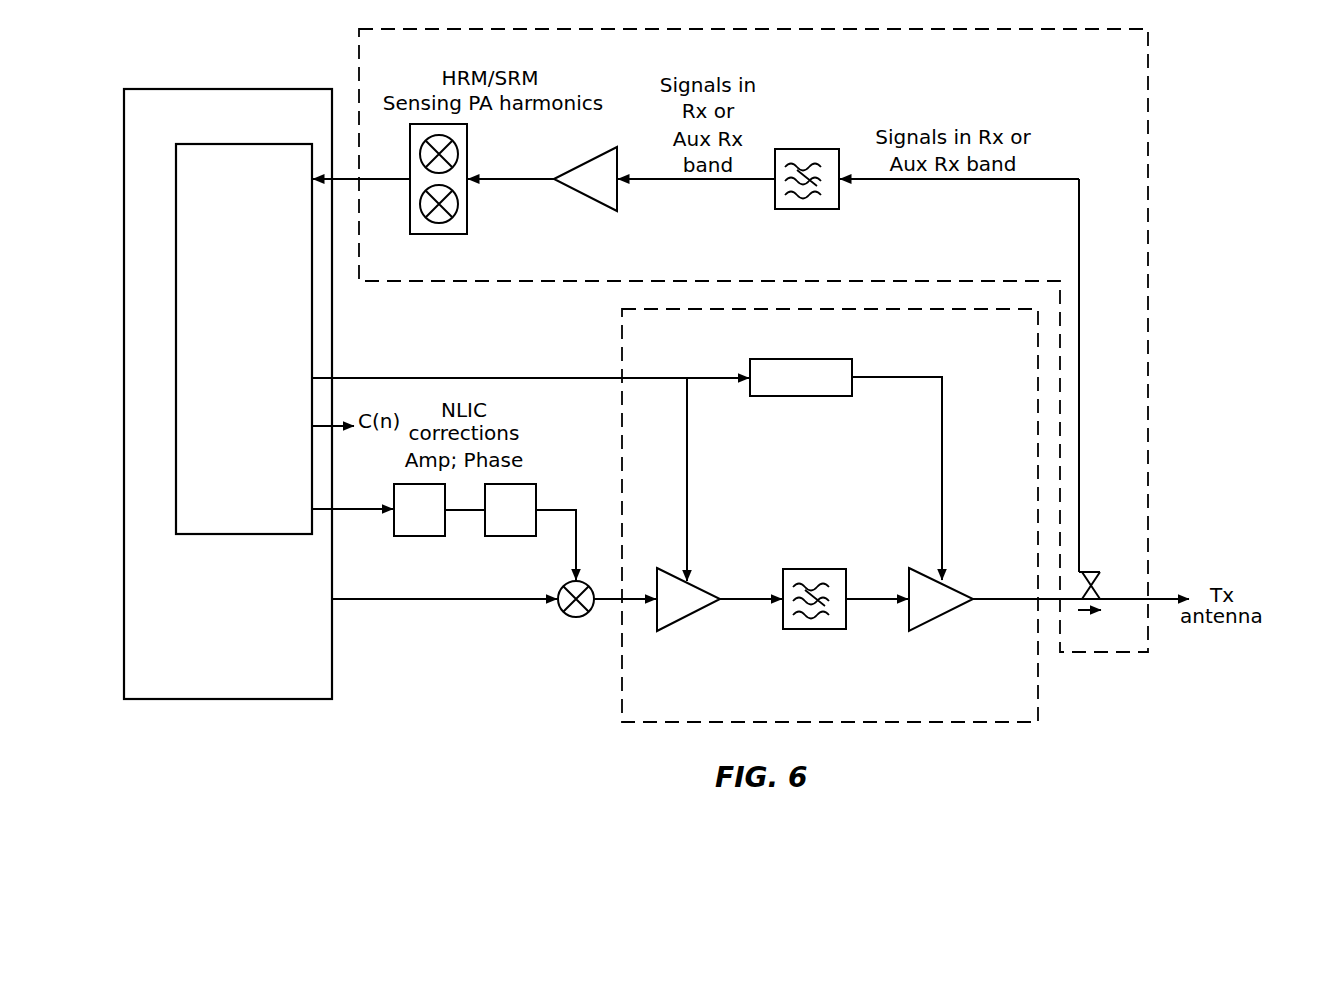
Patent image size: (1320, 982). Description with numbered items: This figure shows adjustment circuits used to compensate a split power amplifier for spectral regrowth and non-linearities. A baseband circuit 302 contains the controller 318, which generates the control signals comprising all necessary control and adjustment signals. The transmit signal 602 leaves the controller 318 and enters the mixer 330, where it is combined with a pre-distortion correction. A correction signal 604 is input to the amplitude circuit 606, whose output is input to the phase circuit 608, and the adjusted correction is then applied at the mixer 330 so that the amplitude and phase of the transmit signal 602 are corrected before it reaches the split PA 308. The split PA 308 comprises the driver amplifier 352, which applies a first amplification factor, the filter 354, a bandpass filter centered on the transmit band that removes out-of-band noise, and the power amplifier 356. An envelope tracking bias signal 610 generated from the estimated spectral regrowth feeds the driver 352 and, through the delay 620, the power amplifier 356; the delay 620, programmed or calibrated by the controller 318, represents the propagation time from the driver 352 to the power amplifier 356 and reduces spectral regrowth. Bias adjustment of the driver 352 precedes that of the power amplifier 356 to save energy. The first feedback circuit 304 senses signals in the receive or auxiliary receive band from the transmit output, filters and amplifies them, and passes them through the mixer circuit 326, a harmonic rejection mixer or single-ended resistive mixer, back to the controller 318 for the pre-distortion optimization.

The baseband circuit 302 is at (208, 89).
The controller 318 is at (222, 144).
The first feedback circuit 304 is at (812, 29).
The mixer circuit 326 is at (457, 234).
The envelope tracking bias signal 610 is at (541, 378).
The correction signal 604 is at (369, 513).
The amplitude circuit 606 is at (422, 536).
The phase circuit 608 is at (530, 484).
The mixer 330 is at (571, 618).
The transmit signal 602 is at (477, 599).
The split power amplifier 308 is at (1015, 722).
The driver amplifier 352 is at (693, 617).
The filter 354 is at (837, 629).
The power amplifier 356 is at (953, 585).
The delay 620 is at (800, 359).